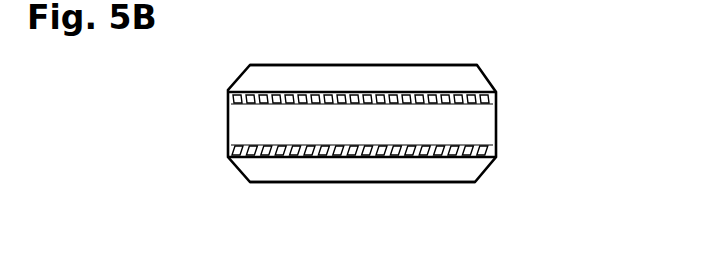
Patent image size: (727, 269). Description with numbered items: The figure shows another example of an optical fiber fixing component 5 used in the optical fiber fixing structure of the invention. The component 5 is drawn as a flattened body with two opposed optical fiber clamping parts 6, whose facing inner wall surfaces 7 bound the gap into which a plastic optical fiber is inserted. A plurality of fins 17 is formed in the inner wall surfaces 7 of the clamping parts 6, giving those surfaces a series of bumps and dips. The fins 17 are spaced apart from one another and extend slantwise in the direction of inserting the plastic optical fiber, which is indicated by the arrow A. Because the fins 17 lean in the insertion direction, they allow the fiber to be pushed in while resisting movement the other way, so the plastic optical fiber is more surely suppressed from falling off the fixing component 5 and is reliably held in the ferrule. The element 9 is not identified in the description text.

The optical fiber fixing component 5 is at (552, 82).
The optical fiber clamping parts 6 is at (436, 47).
The inner wall surfaces 7 is at (320, 148).
The outer layer 9 is at (385, 66).
The fins 17 is at (340, 105).
The arrow A is at (559, 137).